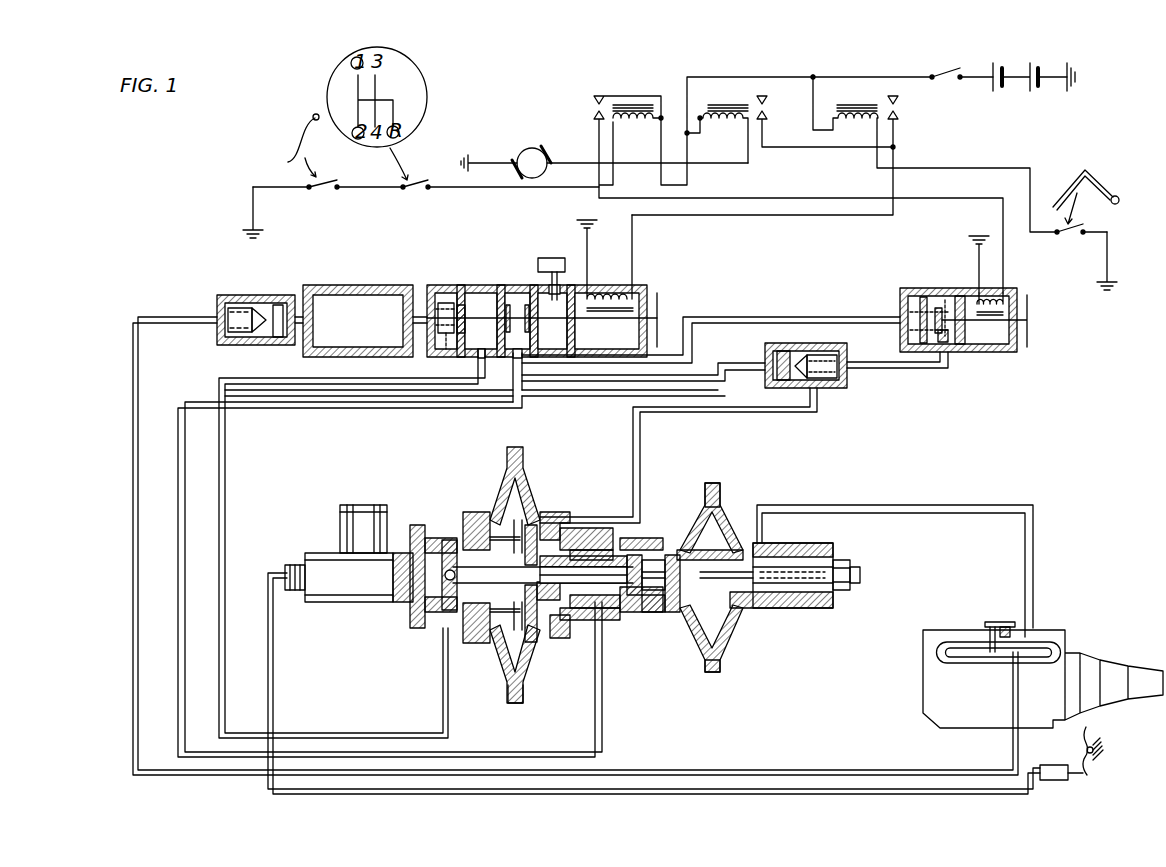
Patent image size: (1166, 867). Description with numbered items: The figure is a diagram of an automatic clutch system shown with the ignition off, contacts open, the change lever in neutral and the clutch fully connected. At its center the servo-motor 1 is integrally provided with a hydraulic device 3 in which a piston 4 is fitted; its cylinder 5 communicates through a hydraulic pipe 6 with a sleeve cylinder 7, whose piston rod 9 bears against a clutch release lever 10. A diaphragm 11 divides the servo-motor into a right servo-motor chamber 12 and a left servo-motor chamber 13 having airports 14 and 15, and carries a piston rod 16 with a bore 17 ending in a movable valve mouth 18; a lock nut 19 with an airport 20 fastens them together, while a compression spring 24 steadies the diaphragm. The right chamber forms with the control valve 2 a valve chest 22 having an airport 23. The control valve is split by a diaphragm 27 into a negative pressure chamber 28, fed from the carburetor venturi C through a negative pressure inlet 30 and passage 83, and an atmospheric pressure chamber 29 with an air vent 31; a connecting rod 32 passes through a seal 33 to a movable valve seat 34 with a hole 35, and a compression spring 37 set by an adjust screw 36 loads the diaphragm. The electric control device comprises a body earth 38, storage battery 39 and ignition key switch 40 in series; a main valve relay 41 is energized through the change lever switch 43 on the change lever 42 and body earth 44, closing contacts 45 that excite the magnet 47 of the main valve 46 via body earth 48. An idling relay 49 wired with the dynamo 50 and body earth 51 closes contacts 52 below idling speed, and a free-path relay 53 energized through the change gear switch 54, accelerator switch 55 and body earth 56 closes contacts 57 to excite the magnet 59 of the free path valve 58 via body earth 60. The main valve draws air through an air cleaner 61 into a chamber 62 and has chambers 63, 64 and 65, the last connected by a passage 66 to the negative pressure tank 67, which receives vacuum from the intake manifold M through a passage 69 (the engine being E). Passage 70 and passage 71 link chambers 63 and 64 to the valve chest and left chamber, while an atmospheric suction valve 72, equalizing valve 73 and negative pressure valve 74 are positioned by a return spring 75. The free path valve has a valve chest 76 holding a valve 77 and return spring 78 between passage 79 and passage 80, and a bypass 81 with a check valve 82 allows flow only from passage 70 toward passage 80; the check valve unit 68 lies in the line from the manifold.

The servo-motor 1 is at (508, 695).
The control valve 2 is at (712, 672).
The hydraulic device 3 is at (311, 567).
The piston 4 is at (412, 562).
The cylinder 5 is at (404, 590).
The hydraulic pipe 6 is at (266, 630).
The sleeve cylinder 7 is at (1058, 764).
The piston rod 9 is at (1085, 777).
The clutch release lever 10 is at (1101, 729).
The diaphragm 11 is at (498, 670).
The right servo-motor chamber 12 is at (530, 485).
The left servo-motor chamber 13 is at (498, 650).
The airport 14 is at (543, 525).
The airport 15 is at (452, 633).
The piston rod 16 is at (455, 560).
The bore 17 is at (592, 550).
The movable valve mouth 18 is at (617, 608).
The lock nut 19 is at (533, 642).
The airport 20 is at (569, 528).
The valve chest 22 is at (660, 612).
The airport 23 is at (578, 620).
The compression spring 24 is at (498, 520).
The diaphragm 27 is at (727, 523).
The negative pressure chamber 28 is at (723, 623).
The atmospheric pressure chamber 29 is at (722, 528).
The negative pressure inlet 30 is at (762, 543).
The air vent 31 is at (670, 612).
The connecting rod 32 is at (670, 555).
The seal 33 is at (677, 548).
The movable valve seat 34 is at (633, 620).
The hole 35 is at (628, 538).
The adjust screw 36 is at (849, 559).
The compression spring 37 is at (774, 608).
The body earth 38 is at (1070, 89).
The storage battery 39 is at (1017, 88).
The ignition key switch 40 is at (940, 72).
The main valve relay 41 is at (853, 139).
The change lever 42 is at (1067, 175).
The change lever switch 43 is at (1070, 240).
The body earth 44 is at (1112, 294).
The contacts 45 is at (899, 103).
The main valve 46 is at (648, 285).
The magnet 47 is at (610, 293).
The body earth 48 is at (583, 220).
The idling relay 49 is at (721, 124).
The dynamo 50 is at (518, 148).
The body earth 51 is at (466, 140).
The contacts 52 is at (768, 113).
The free-path relay 53 is at (635, 123).
The change gear switch 54 is at (423, 196).
The accelerator switch 55 is at (328, 194).
The body earth 56 is at (240, 229).
The contacts 57 is at (592, 106).
The free path valve 58 is at (1013, 288).
The magnet 59 is at (980, 296).
The body earth 60 is at (968, 236).
The air cleaner 61 is at (551, 254).
The chamber 62 is at (628, 280).
The chamber 63 is at (514, 356).
The chamber 64 is at (481, 288).
The chamber 65 is at (439, 293).
The passage 66 is at (422, 291).
The negative pressure tank 67 is at (346, 284).
The check valve 68 is at (256, 294).
The passage 69 is at (192, 326).
The passage 70 is at (292, 410).
The passage 71 is at (282, 378).
The atmospheric suction valve 72 is at (526, 297).
The equalizing valve 73 is at (508, 304).
The negative pressure valve 74 is at (458, 301).
The return spring 75 is at (444, 346).
The valve chest 76 is at (953, 342).
The valve 77 is at (919, 296).
The return spring 78 is at (942, 295).
The passage 79 is at (857, 317).
The passage 80 is at (832, 402).
The bypass 81 is at (737, 363).
The check valve 82 is at (848, 347).
The passage 83 is at (959, 505).
The carburetor venturi C is at (993, 622).
The intake manifold M is at (1046, 642).
The engine E is at (922, 688).